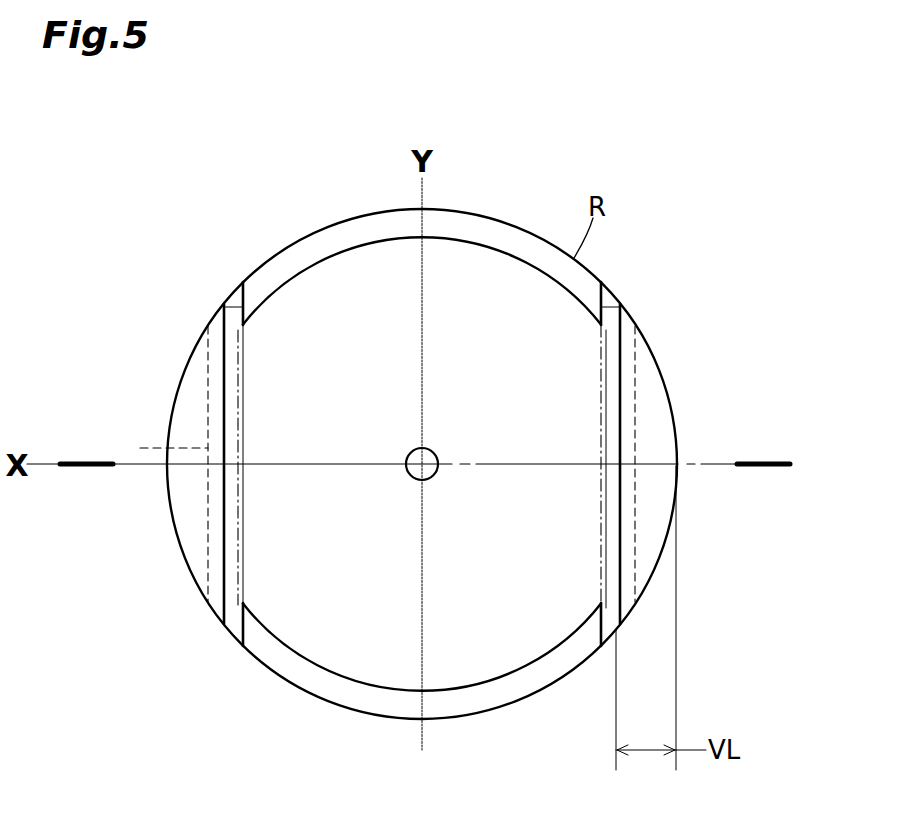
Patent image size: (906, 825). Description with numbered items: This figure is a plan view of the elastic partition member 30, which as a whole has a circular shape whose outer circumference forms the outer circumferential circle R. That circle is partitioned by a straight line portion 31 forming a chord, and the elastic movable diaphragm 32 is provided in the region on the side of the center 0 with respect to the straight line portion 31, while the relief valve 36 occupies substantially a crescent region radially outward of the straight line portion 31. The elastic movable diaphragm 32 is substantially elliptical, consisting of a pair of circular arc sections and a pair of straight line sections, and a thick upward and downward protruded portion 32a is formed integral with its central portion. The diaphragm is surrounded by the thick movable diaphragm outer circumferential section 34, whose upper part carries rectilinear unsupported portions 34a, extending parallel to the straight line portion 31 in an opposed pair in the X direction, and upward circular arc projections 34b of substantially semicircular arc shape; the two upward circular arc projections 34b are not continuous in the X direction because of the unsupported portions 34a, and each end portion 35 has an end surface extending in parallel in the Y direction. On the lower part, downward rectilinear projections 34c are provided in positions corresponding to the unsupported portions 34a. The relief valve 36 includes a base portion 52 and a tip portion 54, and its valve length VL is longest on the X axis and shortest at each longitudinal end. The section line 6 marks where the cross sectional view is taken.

The elastic partition member 30 is at (640, 295).
The straight line portion 31 is at (222, 570).
The elastic movable diaphragm 32 is at (318, 292).
The upward and downward protruded portion 32a is at (430, 457).
The movable diaphragm outer circumferential section 34 is at (381, 223).
The unsupported portion 34a is at (238, 416).
The upward circular arc projection 34b is at (243, 283).
The downward rectilinear projection 34c is at (140, 447).
The end portion 35 is at (222, 308).
The relief valve 36 is at (190, 533).
The base portion 52 is at (223, 390).
The tip portion 54 is at (168, 426).
The center 0 is at (421, 466).
The section line 6 is at (81, 469).